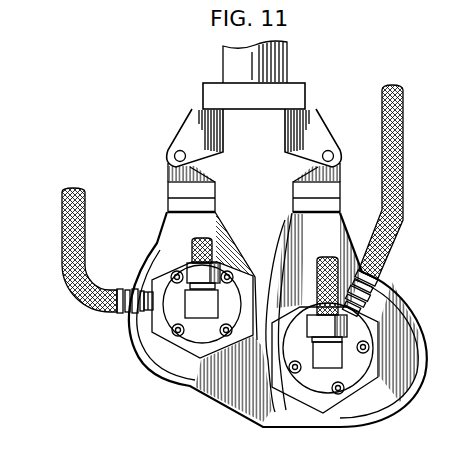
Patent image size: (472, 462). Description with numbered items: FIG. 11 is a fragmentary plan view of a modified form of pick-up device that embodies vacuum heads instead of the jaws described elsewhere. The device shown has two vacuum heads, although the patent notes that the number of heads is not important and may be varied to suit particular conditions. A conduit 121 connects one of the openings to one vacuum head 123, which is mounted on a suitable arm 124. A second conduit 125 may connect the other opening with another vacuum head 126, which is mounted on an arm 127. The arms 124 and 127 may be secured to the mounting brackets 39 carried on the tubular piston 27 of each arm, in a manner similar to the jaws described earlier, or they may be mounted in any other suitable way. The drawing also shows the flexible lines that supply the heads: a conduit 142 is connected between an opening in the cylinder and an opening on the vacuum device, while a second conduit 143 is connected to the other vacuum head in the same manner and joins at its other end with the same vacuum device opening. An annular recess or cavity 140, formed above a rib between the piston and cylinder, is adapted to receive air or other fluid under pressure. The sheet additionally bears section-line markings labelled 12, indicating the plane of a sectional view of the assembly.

The tubular piston 27 is at (288, 62).
The mounting brackets 39 is at (190, 126).
The conduit 121 is at (209, 236).
The vacuum head 123 is at (240, 272).
The arm 124 is at (163, 248).
The second conduit 125 is at (326, 258).
The vacuum head 126 is at (370, 376).
The arm 127 is at (292, 240).
The annular recess or cavity 140 is at (471, 134).
The conduit 142 is at (401, 176).
The second conduit 143 is at (62, 265).
The section line 12- 12 is at (404, 197).